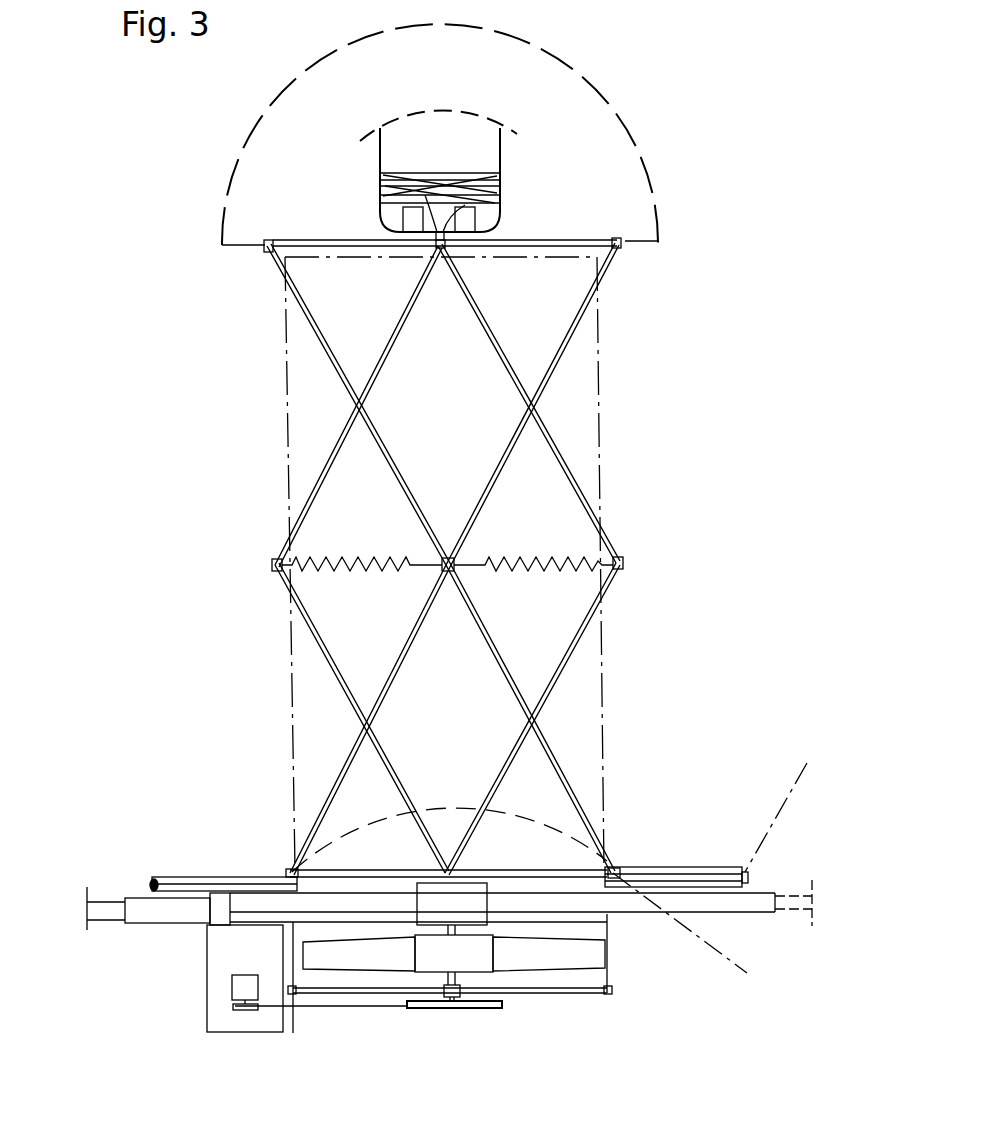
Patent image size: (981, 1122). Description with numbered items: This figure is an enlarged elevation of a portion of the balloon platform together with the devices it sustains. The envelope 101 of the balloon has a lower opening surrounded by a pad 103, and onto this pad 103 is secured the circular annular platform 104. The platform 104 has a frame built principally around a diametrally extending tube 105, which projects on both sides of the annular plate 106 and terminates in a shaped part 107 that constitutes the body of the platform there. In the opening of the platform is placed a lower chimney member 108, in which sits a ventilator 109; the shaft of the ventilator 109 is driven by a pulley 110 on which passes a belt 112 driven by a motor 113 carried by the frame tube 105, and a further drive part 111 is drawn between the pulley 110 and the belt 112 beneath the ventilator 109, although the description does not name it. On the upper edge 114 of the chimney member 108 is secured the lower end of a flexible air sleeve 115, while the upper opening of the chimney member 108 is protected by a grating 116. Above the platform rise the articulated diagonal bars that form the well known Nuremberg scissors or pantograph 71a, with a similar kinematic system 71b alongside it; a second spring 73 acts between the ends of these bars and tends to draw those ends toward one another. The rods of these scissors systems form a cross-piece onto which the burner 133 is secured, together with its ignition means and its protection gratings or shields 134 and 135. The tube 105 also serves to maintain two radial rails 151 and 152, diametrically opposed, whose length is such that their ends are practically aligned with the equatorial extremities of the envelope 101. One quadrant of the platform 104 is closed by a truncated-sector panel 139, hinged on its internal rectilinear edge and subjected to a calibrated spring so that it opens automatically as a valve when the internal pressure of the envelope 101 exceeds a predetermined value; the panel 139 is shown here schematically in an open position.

The protection grating 134 is at (549, 51).
The protection grating 135 is at (413, 111).
The burner 133 is at (503, 180).
The second spring 73 is at (320, 556).
The pantograph 71a is at (318, 653).
The kinematic system 71b is at (580, 655).
The flexible air sleeve 115 is at (605, 746).
The grating 116 is at (524, 819).
The upper edge 114 is at (621, 868).
The circular annular platform 104 is at (670, 856).
The pad 103 is at (758, 874).
The envelope 101 is at (792, 779).
The panel 139 is at (735, 963).
The annular plate 106 is at (243, 884).
The shaped part 107 is at (150, 883).
The lower chimney member 108 is at (609, 935).
The tube 105 is at (195, 910).
The radial rail 151 is at (112, 912).
The radial rail 152 is at (802, 904).
The motor 113 is at (205, 1000).
The ventilator 109 is at (560, 961).
The pulley 110 is at (462, 978).
The plate 111 is at (455, 1008).
The belt 112 is at (355, 1006).